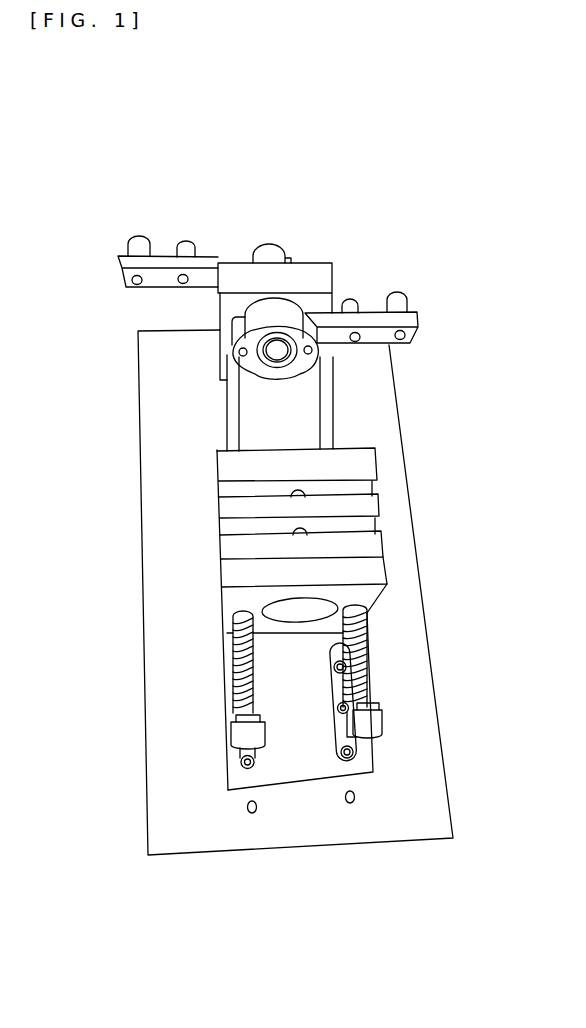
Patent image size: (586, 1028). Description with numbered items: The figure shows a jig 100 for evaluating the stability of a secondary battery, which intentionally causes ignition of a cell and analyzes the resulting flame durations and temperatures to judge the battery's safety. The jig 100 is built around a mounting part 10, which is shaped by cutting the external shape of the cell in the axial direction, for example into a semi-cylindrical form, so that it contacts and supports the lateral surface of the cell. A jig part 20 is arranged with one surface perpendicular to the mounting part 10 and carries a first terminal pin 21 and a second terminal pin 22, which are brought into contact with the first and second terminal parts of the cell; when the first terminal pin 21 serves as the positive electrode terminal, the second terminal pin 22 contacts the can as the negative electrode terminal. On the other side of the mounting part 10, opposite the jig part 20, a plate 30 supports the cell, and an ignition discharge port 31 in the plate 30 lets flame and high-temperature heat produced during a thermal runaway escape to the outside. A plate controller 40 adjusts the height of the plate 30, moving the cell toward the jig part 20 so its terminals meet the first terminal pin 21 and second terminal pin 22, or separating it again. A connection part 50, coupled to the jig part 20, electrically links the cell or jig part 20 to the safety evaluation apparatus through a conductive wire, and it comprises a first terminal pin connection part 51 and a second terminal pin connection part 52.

The jig for evaluating stability of a secondary battery 100 is at (106, 107).
The mounting part 10 is at (232, 412).
The jig part 20 is at (262, 315).
The first terminal pin 21 is at (277, 350).
The second terminal pin 22 is at (290, 365).
The plate 30 is at (363, 467).
The ignition discharge port 31 is at (318, 607).
The plate controller 40 is at (367, 677).
The connection part 50 is at (352, 150).
The first terminal pin connection part 51 is at (374, 312).
The second terminal pin connection part 52 is at (213, 257).